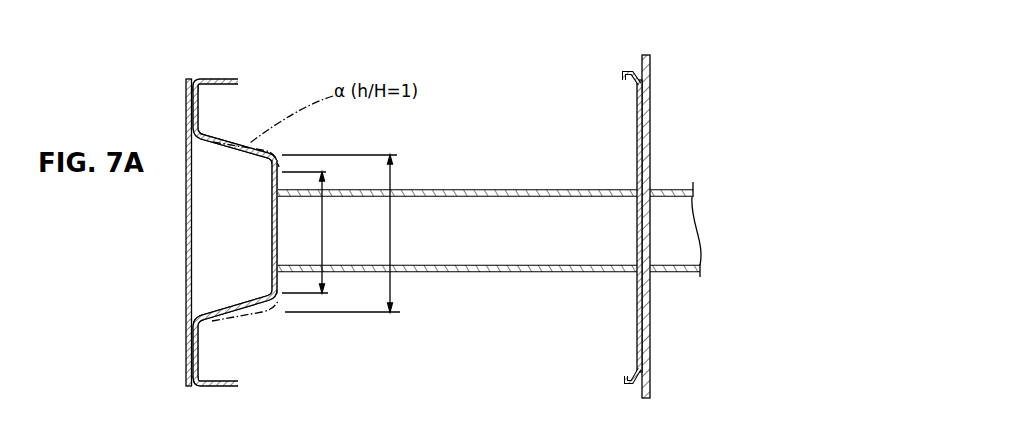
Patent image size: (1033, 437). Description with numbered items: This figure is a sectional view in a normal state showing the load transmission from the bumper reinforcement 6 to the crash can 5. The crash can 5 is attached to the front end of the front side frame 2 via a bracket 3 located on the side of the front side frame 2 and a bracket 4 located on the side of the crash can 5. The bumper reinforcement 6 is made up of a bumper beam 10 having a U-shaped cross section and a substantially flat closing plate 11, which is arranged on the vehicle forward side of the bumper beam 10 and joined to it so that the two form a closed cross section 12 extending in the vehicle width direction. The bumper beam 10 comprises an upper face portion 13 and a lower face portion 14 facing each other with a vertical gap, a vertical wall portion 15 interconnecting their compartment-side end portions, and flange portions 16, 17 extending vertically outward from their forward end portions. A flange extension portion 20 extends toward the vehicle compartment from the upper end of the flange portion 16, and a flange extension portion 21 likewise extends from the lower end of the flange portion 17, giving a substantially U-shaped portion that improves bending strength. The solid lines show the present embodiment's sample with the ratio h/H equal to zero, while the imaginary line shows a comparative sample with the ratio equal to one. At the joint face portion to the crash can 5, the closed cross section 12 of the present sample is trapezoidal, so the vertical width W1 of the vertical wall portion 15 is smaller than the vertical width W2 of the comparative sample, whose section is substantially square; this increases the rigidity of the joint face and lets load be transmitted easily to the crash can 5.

The front side frame 2 is at (681, 187).
The bracket 3 is at (651, 101).
The bracket 4 is at (636, 143).
The crash can 5 is at (498, 188).
The bumper reinforcement 6 is at (280, 245).
The bumper beam 10 is at (250, 313).
The closing plate 11 is at (186, 235).
The closed cross section 12 is at (242, 230).
The upper face portion 13 is at (225, 157).
The lower face portion 14 is at (218, 308).
The vertical wall portion 15 is at (278, 225).
The flange portion 16 is at (198, 105).
The flange portion 17 is at (198, 353).
The flange extension portion 20 is at (217, 78).
The flange extension portion 21 is at (216, 389).
The vertical width W1 is at (326, 219).
The vertical width W2 is at (392, 222).